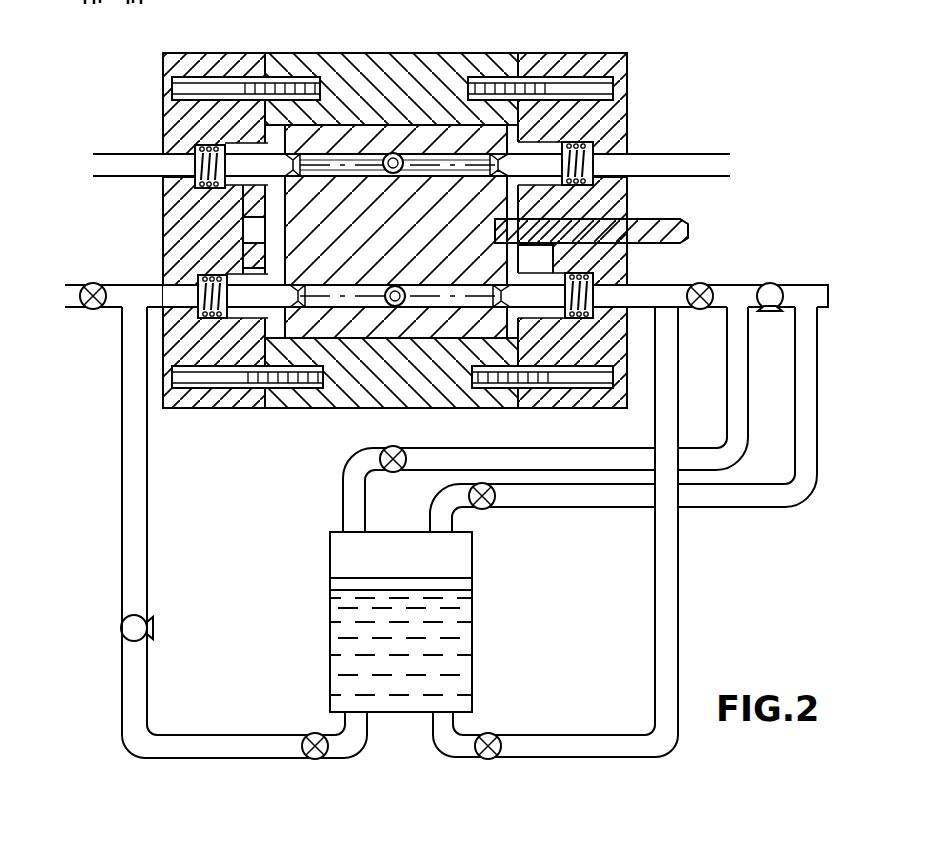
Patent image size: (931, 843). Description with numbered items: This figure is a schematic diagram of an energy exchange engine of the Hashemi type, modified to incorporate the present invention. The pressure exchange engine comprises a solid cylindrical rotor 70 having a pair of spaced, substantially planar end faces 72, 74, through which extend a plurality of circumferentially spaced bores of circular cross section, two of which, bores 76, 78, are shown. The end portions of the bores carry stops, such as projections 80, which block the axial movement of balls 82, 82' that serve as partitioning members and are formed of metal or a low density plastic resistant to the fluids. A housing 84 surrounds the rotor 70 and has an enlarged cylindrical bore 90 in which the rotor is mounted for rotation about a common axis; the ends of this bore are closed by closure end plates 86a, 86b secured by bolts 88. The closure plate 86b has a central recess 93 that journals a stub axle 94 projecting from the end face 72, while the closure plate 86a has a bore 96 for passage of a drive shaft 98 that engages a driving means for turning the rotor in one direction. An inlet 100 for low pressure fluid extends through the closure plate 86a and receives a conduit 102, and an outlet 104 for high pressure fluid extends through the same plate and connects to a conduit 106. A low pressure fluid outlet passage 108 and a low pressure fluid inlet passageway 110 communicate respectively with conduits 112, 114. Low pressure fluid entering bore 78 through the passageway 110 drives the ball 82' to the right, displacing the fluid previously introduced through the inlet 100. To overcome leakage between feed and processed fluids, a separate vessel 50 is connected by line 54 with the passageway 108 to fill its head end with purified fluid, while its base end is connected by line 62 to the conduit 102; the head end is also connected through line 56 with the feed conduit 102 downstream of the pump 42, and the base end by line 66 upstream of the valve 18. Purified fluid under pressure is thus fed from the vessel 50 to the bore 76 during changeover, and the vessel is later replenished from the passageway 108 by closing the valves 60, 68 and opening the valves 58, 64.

The valve 18 is at (700, 309).
The pump 42 is at (771, 312).
The vessel 50 is at (473, 650).
The line 54 is at (148, 565).
The line 56 is at (680, 622).
The valve 58 is at (312, 735).
The valve 60 is at (495, 733).
The line 62 is at (466, 448).
The valve 64 is at (483, 510).
The line 66 is at (760, 508).
The valve 68 is at (393, 473).
The rotor 70 is at (422, 240).
The end face 72 is at (262, 200).
The end face 74 is at (395, 230).
The bore 76 is at (377, 160).
The bore 78 is at (421, 302).
The projection 80 is at (358, 162).
The ball 82 is at (350, 370).
The ball 82' is at (427, 92).
The housing 84 is at (317, 64).
The closure end plate 86a is at (590, 60).
The closure end plate 86b is at (212, 62).
The bolt 88 is at (242, 87).
The cylindrical bore 90 is at (443, 340).
The central recess 93 is at (200, 258).
The stub axle 94 is at (248, 233).
The bore 96 is at (605, 207).
The drive shaft 98 is at (668, 232).
The inlet 100 is at (610, 293).
The conduit 102 is at (803, 283).
The outlet 104 is at (612, 162).
The conduit 106 is at (690, 162).
The low pressure fluid outlet passage 108 is at (192, 298).
The low pressure fluid inlet passageway 110 is at (182, 168).
The conduit 112 is at (72, 285).
The conduit 114 is at (97, 152).